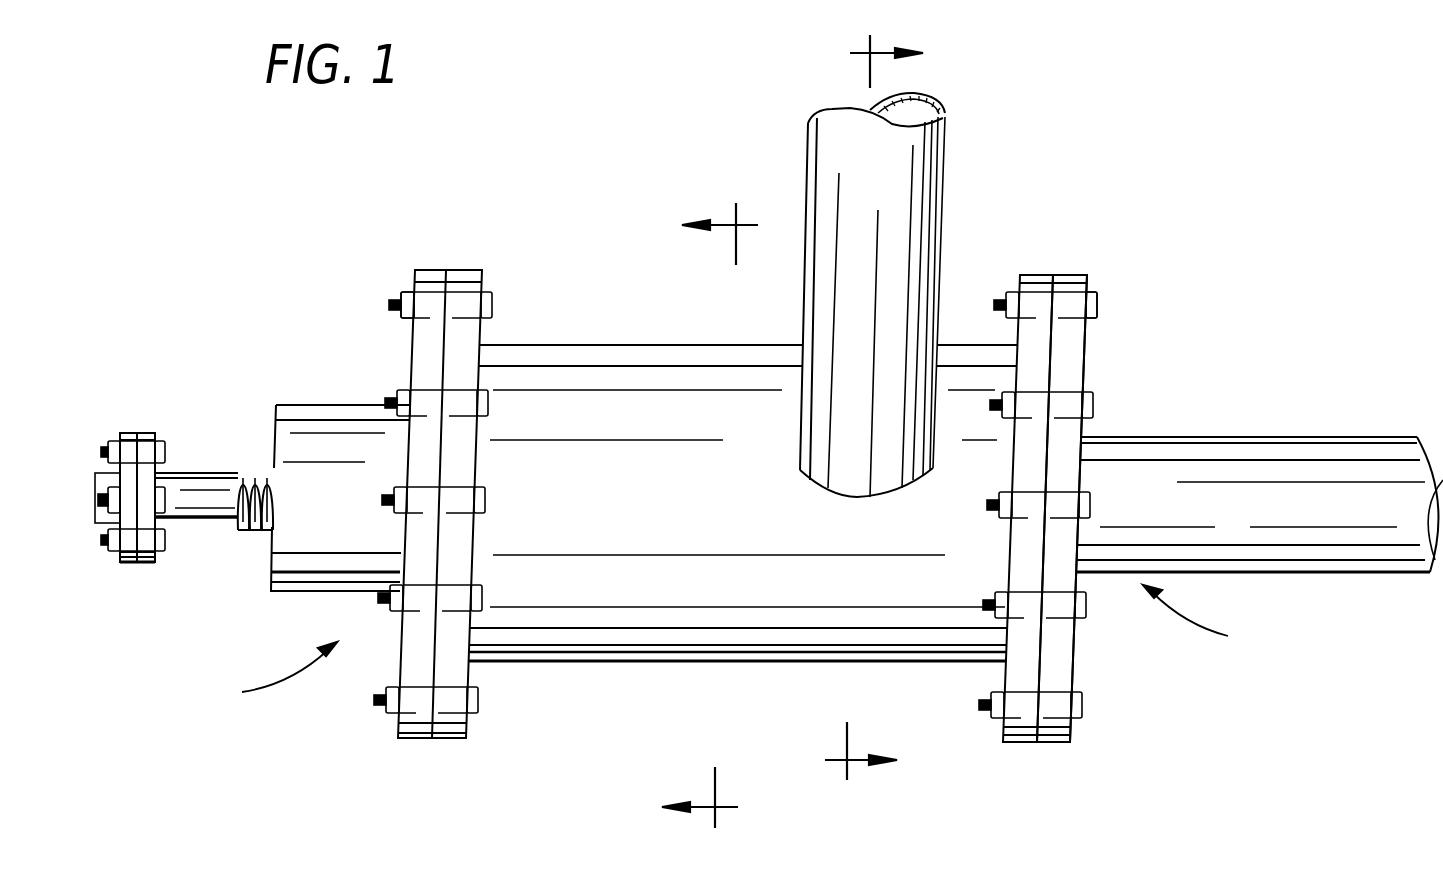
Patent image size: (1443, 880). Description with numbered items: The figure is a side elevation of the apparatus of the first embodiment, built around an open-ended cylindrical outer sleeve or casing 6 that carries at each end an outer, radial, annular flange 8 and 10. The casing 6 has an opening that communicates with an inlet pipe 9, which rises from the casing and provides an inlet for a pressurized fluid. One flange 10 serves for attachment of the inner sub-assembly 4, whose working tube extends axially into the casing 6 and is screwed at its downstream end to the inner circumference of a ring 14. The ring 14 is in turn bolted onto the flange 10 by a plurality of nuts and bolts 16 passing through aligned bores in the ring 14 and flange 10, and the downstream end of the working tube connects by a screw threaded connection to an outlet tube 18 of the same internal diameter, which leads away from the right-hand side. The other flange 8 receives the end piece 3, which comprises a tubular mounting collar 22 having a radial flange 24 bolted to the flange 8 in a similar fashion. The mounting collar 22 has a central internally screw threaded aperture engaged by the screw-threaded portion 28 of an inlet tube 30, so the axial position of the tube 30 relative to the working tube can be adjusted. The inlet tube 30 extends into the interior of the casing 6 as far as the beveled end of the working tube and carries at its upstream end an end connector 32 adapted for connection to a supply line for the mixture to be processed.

The end piece 3 is at (489, 519).
The inner sub-assembly 4 is at (1033, 408).
The outer sleeve or casing 6 is at (620, 345).
The flange 8 is at (457, 270).
The inlet pipe 9 is at (808, 160).
The flange 10 is at (1030, 274).
The ring 14 is at (1070, 663).
The nuts and bolts 16 is at (1093, 310).
The outlet tube 18 is at (1305, 578).
The tubular mounting collar 22 is at (365, 405).
The radial flange 24 is at (415, 268).
The screw-threaded portion 28 is at (268, 468).
The inlet tube 30 is at (212, 522).
The end connector 32 is at (125, 565).